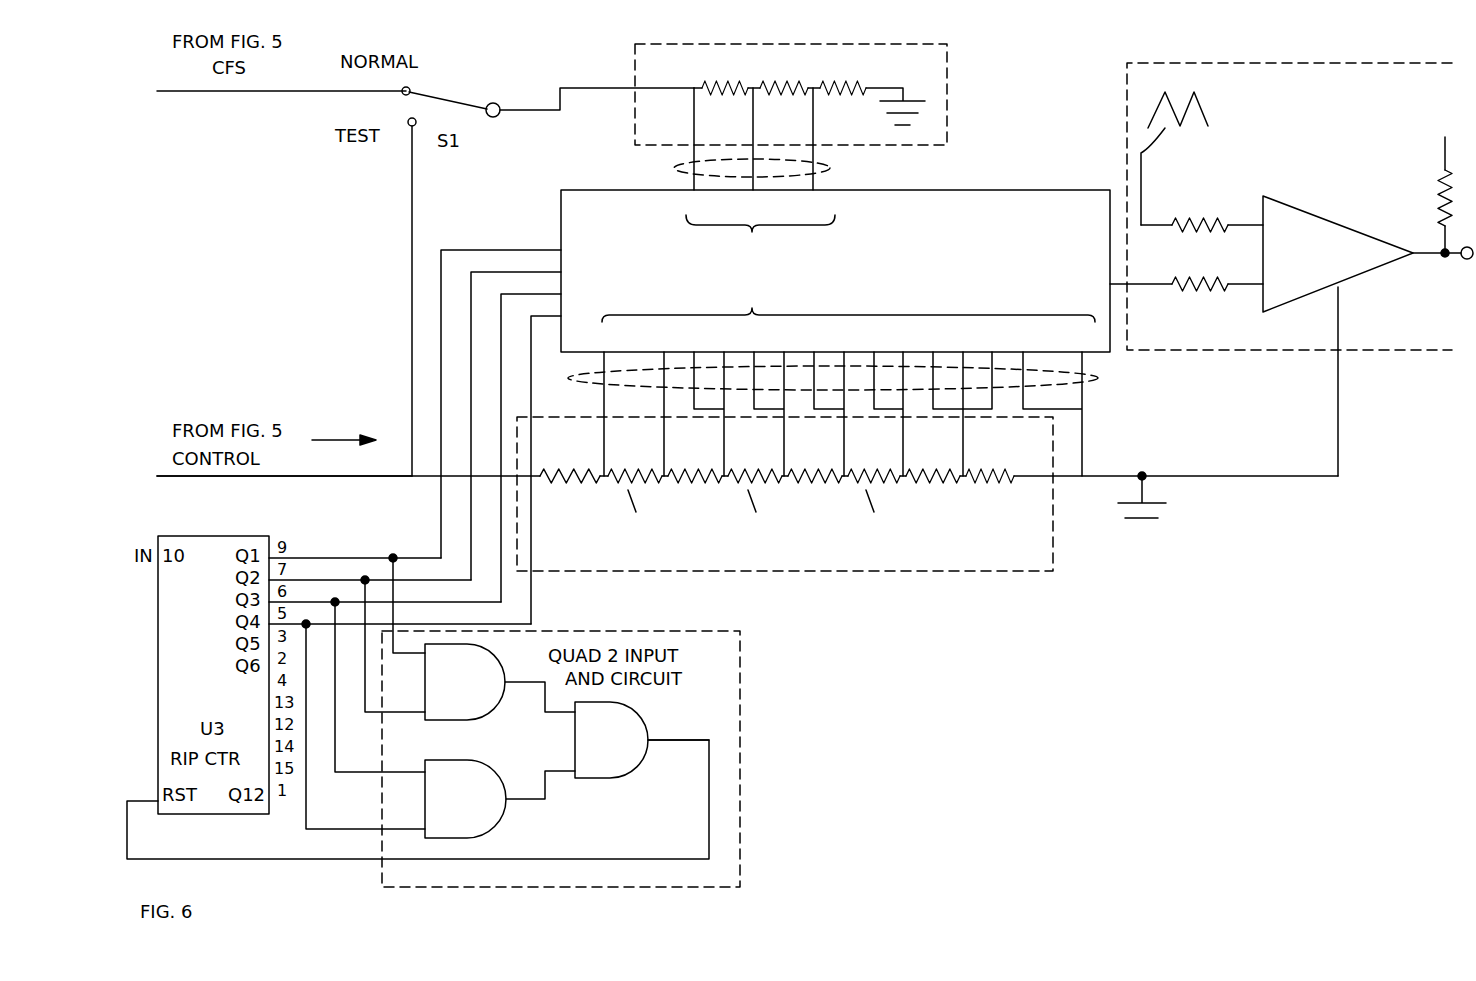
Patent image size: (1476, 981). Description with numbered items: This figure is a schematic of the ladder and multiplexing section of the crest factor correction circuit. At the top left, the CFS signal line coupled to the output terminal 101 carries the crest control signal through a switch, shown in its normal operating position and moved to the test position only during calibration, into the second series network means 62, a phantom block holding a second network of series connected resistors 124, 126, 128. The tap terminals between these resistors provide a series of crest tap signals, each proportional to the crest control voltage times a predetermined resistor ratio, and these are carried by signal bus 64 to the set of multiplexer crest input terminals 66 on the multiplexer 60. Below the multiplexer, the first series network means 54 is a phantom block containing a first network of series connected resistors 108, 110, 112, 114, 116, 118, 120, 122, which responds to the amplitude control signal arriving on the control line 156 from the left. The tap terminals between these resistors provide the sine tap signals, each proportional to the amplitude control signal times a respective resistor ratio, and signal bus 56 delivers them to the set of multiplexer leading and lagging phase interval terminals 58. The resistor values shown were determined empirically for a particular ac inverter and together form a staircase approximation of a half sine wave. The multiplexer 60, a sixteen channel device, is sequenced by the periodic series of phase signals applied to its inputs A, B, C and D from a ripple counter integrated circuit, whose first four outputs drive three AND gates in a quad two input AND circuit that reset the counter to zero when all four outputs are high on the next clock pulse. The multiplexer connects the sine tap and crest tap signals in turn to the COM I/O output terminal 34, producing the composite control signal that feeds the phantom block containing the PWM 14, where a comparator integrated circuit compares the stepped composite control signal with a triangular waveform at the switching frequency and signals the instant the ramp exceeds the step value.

The output terminal 101 is at (180, 91).
The second series network means 62 is at (930, 74).
The ladder resistor 124 is at (744, 82).
The ladder resistor 126 is at (804, 82).
The ladder resistor 128 is at (864, 82).
The signal bus 64 is at (830, 168).
The multiplexer 60 is at (642, 250).
The multiplexer crest input terminals 66 is at (760, 237).
The multiplexer leading and lagging phase interval terminals 58 is at (848, 305).
The signal bus 56 is at (1097, 385).
The first series network means 54 is at (1028, 557).
The ladder resistor 108 is at (586, 467).
The ladder resistor 110 is at (654, 467).
The ladder resistor 112 is at (714, 467).
The ladder resistor 114 is at (774, 467).
The ladder resistor 116 is at (834, 467).
The ladder resistor 118 is at (892, 467).
The ladder resistor 120 is at (952, 467).
The ladder resistor 122 is at (986, 464).
The control line from FIG. 5 156 is at (190, 477).
The PWM 14 is at (1368, 99).
The output terminal 34 is at (1115, 278).